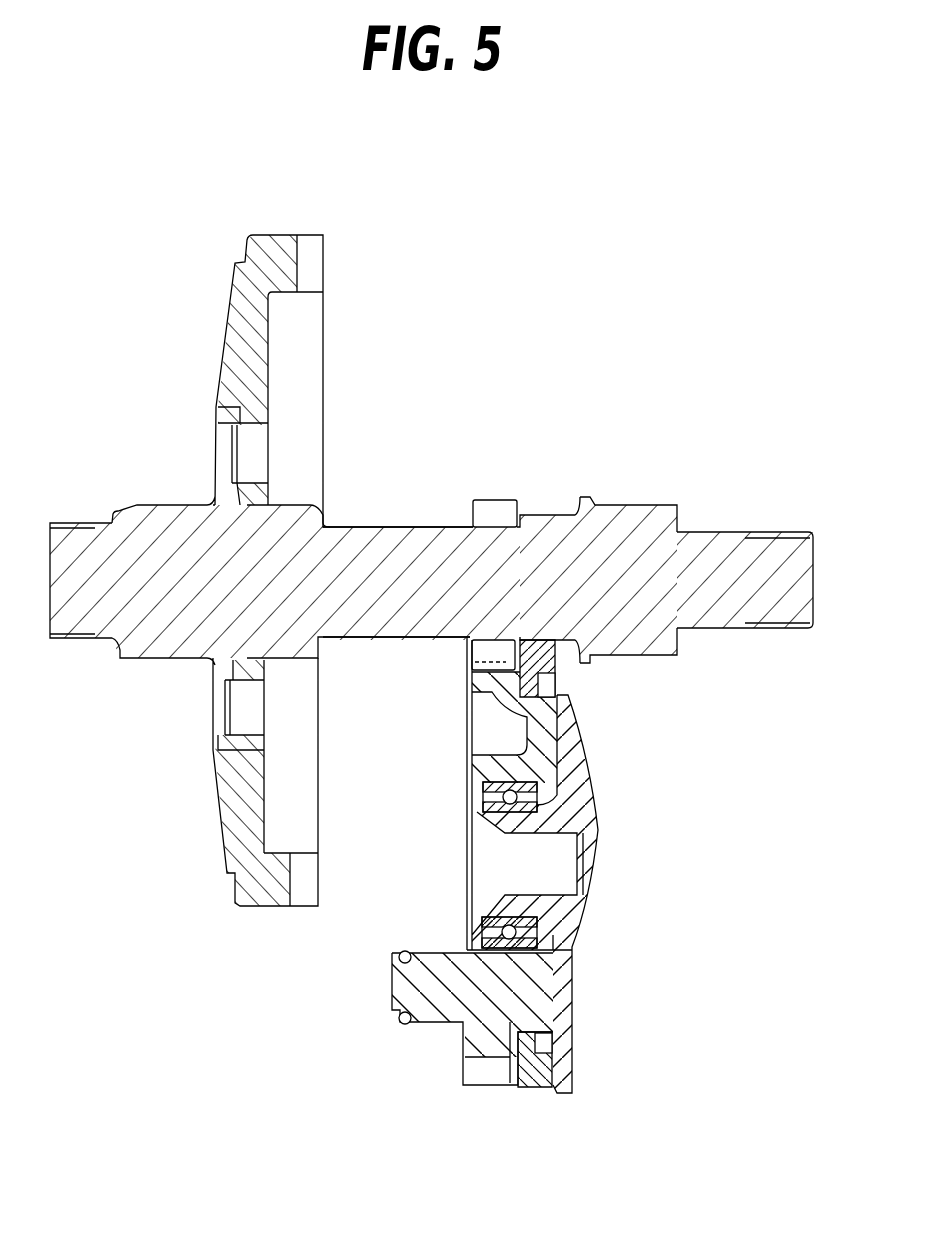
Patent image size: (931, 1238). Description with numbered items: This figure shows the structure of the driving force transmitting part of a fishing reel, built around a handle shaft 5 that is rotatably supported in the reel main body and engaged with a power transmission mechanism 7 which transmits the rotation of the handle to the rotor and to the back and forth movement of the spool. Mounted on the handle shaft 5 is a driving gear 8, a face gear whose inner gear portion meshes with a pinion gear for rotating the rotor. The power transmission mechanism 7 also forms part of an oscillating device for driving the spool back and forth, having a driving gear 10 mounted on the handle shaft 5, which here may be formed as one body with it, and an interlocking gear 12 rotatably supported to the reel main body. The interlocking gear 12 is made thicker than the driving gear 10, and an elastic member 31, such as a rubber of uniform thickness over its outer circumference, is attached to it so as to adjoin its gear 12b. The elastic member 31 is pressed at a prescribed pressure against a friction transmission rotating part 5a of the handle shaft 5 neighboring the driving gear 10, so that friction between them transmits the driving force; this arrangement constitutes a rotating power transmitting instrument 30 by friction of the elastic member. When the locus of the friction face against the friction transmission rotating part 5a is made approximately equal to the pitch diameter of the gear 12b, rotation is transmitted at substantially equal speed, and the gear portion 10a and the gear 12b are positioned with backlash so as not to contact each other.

The handle shaft 5 is at (330, 560).
The friction transmission rotating part 5a is at (542, 520).
The power transmission mechanism 7 is at (455, 322).
The driving gear 8 is at (237, 353).
The driving gear 10 is at (487, 538).
The gear portion 10a is at (505, 500).
The interlocking gear 12 is at (468, 775).
The gear 12b is at (472, 655).
The rotating power transmitting instrument 30 is at (593, 683).
The elastic member 31 is at (573, 1062).